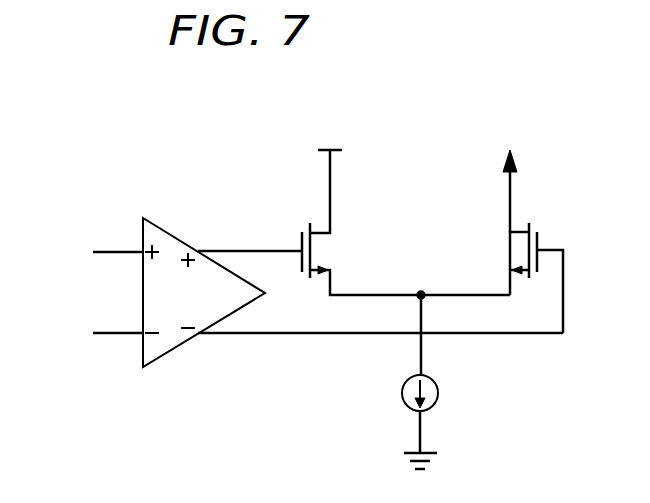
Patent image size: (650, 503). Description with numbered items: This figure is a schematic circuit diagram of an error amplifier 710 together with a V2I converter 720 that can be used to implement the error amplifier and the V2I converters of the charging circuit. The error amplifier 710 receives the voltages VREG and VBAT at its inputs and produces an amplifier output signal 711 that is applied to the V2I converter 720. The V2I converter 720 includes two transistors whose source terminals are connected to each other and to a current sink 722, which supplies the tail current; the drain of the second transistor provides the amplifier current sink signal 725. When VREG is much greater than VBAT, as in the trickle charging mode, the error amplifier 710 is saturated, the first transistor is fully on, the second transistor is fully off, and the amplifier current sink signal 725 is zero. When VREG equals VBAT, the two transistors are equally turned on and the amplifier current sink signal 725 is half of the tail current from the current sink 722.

The error amplifier 710 is at (174, 234).
The amplifier output signal 711 is at (257, 249).
The V2I converter 720 is at (427, 135).
The current sink 722 is at (440, 394).
The amplifier current sink signal 725 is at (512, 196).